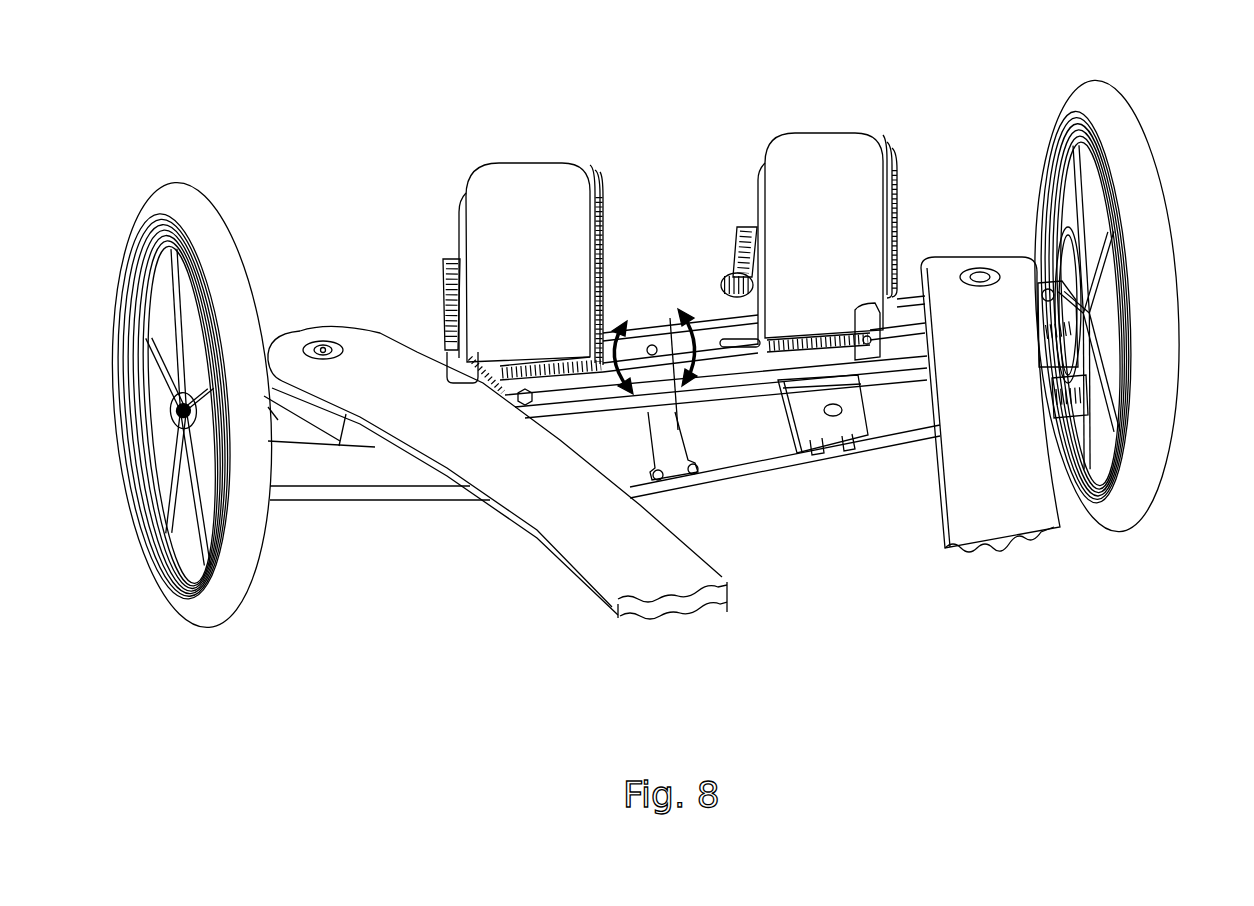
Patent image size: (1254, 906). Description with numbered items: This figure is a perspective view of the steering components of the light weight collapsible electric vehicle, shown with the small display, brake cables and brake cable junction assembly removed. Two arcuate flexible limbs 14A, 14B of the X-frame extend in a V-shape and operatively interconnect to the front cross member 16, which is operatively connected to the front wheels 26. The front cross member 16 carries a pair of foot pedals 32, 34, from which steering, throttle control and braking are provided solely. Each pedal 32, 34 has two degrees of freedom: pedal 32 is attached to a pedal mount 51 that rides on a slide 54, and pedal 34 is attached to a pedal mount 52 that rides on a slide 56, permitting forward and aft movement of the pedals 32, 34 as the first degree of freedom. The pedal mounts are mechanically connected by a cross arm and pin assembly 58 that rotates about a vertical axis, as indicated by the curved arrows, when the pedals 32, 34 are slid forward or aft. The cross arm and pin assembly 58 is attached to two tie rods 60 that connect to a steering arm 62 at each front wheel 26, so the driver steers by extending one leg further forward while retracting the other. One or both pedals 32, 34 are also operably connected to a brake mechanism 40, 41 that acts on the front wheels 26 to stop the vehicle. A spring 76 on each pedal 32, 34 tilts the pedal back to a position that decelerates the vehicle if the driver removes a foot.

The front wheel 26 is at (193, 183).
The brake mechanism 40 is at (1097, 227).
The brake mechanism 41 is at (168, 556).
The steering arm 62 is at (1090, 420).
The arcuate flexible limb 14A is at (1084, 552).
The arcuate flexible limb 14B is at (495, 553).
The front cross member 16 is at (318, 437).
The tie rods 60 is at (668, 484).
The slide 56 is at (675, 482).
The cross arm and pin assembly 58 is at (673, 352).
The pedal mount 52 is at (450, 347).
The foot pedal 34 is at (505, 163).
The foot pedal 32 is at (797, 133).
The spring 76 is at (737, 277).
The pedal mount 51 is at (877, 300).
The slide 54 is at (862, 412).